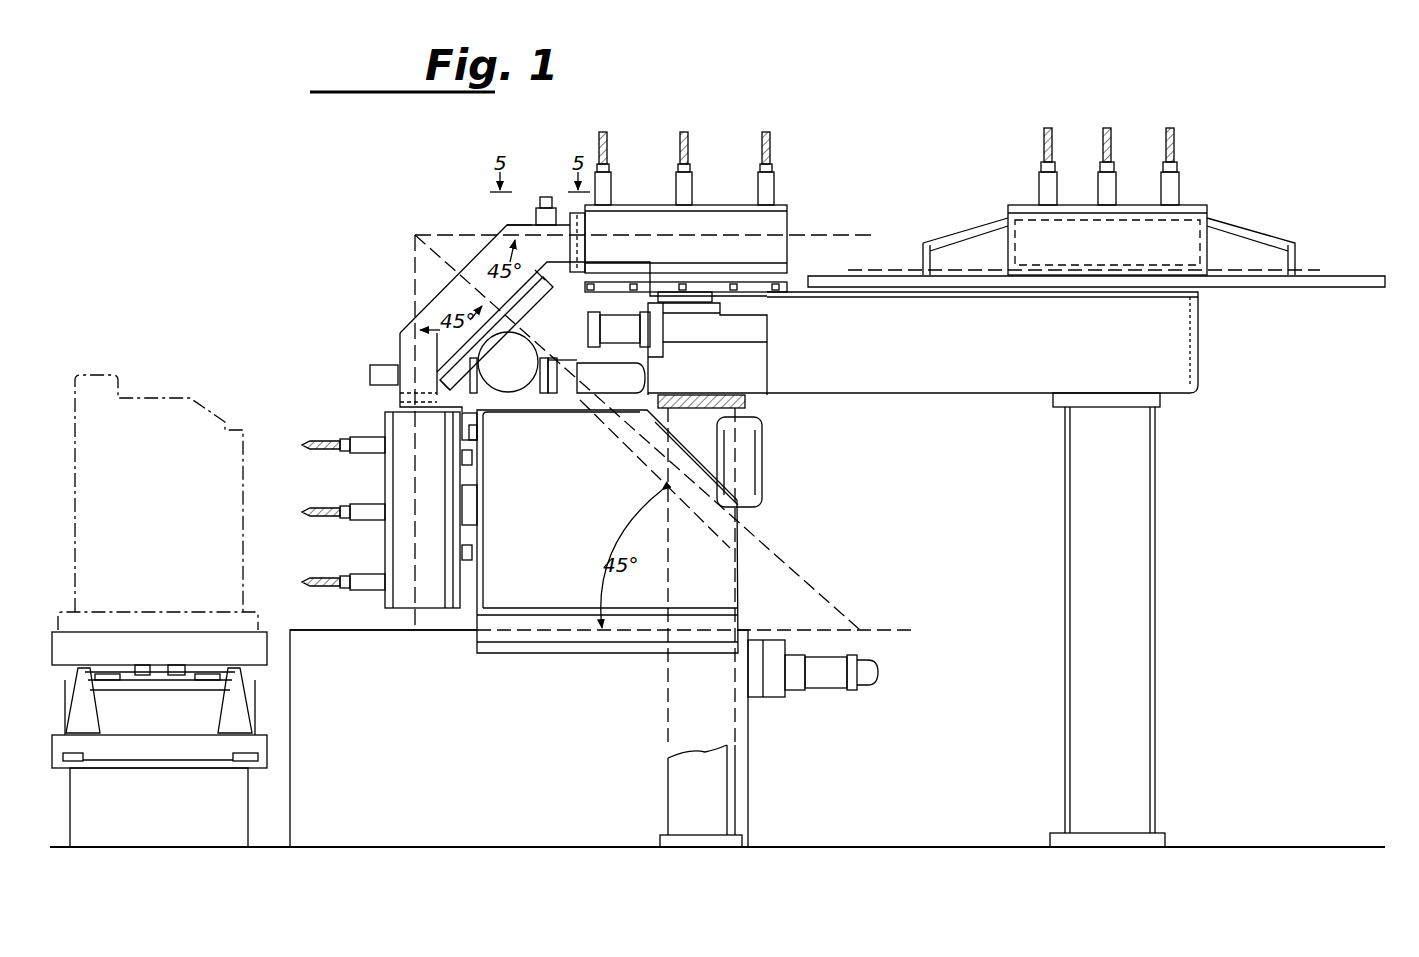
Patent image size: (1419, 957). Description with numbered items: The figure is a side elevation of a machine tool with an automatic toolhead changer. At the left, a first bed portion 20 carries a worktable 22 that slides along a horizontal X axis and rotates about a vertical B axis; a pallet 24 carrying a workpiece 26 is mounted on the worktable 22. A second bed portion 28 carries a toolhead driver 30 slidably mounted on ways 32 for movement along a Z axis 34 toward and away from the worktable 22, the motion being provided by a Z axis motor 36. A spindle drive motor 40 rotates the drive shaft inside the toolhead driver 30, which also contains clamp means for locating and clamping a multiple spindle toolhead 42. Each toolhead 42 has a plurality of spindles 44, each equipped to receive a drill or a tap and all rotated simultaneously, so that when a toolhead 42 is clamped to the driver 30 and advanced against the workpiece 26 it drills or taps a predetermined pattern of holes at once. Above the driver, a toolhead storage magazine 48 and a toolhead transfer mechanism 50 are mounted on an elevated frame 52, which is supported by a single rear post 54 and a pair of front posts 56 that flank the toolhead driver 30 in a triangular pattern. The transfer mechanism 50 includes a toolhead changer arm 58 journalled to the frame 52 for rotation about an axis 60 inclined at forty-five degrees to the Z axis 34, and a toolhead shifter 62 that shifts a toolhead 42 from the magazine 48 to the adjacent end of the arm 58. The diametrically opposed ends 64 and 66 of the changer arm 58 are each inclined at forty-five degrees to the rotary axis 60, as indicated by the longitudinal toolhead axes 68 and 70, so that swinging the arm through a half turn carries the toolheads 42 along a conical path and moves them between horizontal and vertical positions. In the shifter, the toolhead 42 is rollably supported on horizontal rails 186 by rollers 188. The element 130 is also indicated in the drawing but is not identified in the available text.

The first bed portion 20 is at (160, 810).
The worktable 22 is at (168, 724).
The pallet 24 is at (168, 661).
The workpiece 26 is at (168, 531).
The second bed portion 28 is at (492, 752).
The toolhead driver 30 is at (578, 536).
The ways 32 is at (378, 625).
The Z axis 34 is at (862, 628).
The Z axis motor 36 is at (832, 678).
The spindle drive motor 40 is at (765, 455).
The multiple spindle toolhead 42 is at (1190, 212).
The spindles 44 is at (1052, 183).
The toolhead storage magazine 48 is at (1230, 217).
The toolhead transfer mechanism 50 is at (487, 225).
The elevated frame 52 is at (958, 365).
The rear post 54 is at (1115, 570).
The front posts 56 is at (745, 400).
The toolhead changer arm 58 is at (440, 308).
The rotary axis 60 is at (583, 402).
The toolhead shifter 62 is at (742, 296).
The end of toolhead changer arm 64 is at (408, 385).
The end of toolhead changer arm 66 is at (528, 224).
The longitudinal toolhead axis 68 is at (415, 270).
The longitudinal toolhead axis 70 is at (447, 240).
The stop 130 is at (547, 210).
The horizontal rails 186 is at (662, 288).
The rollers 188 is at (600, 288).